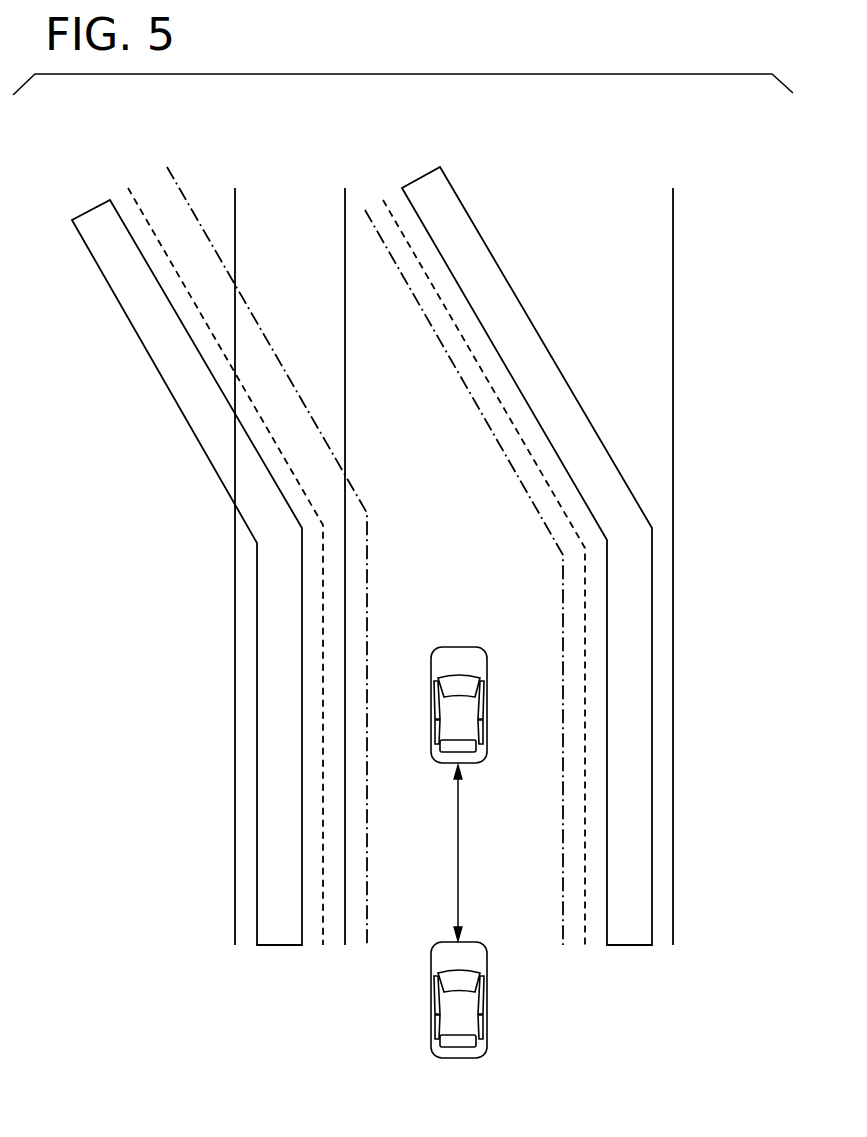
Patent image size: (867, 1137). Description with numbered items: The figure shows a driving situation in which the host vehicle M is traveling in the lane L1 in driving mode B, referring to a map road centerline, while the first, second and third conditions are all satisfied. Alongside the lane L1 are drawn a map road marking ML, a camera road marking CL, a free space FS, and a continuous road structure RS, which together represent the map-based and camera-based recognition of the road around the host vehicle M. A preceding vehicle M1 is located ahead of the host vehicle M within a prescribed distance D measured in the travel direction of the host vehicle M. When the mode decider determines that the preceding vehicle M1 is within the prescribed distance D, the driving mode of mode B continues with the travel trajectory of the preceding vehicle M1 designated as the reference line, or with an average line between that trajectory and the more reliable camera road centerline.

The lane L1 is at (398, 137).
The map road marking ML is at (673, 298).
The continuous road structure RS is at (652, 668).
The camera road marking CL is at (485, 375).
The free space FS is at (502, 455).
The preceding vehicle M1 is at (457, 645).
The host vehicle M is at (458, 1060).
The prescribed distance D is at (469, 853).